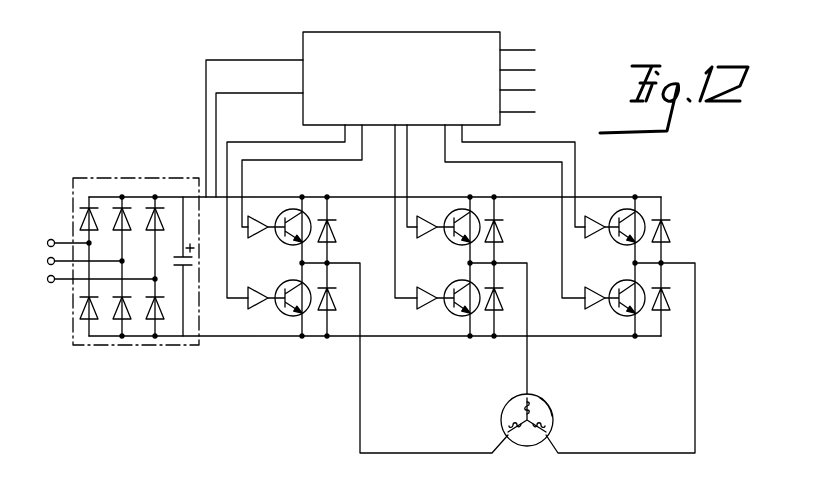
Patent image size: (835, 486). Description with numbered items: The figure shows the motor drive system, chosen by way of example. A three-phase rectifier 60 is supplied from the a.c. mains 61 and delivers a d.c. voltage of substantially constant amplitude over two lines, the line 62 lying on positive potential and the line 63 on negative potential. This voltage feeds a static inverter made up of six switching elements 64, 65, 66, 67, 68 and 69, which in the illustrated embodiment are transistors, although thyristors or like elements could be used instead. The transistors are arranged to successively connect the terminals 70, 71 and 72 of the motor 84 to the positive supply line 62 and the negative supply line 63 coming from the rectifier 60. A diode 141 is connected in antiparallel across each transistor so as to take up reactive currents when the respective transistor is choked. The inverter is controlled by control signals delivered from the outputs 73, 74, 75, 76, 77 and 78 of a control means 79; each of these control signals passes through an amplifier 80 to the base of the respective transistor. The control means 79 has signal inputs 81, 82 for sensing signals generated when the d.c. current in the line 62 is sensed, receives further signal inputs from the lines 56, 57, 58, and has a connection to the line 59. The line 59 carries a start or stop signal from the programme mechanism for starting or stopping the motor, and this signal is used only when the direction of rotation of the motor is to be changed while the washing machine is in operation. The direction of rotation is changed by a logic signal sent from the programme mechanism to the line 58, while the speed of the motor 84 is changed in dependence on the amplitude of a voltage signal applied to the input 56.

The control means 79 is at (402, 32).
The line 59 is at (500, 48).
The input 56 is at (500, 69).
The line 57 is at (500, 90).
The line 58 is at (500, 111).
The signal input 81 is at (303, 60).
The signal input 82 is at (303, 93).
The output 73 is at (345, 125).
The output 74 is at (362, 125).
The output 75 is at (407, 125).
The output 76 is at (395, 125).
The output 77 is at (462, 125).
The output 78 is at (445, 125).
The three-phase rectifier 60 is at (122, 178).
The a.c. mains 61 is at (45, 277).
The line 62 is at (265, 197).
The line 63 is at (266, 336).
The switching element 64 is at (288, 242).
The switching element 65 is at (279, 313).
The switching element 66 is at (456, 242).
The switching element 67 is at (453, 313).
The switching element 68 is at (620, 242).
The switching element 69 is at (619, 313).
The amplifier 80 is at (252, 238).
The diode 141 is at (336, 230).
The terminal 70 is at (529, 396).
The terminal 71 is at (549, 440).
The terminal 72 is at (505, 437).
The motor 84 is at (552, 416).